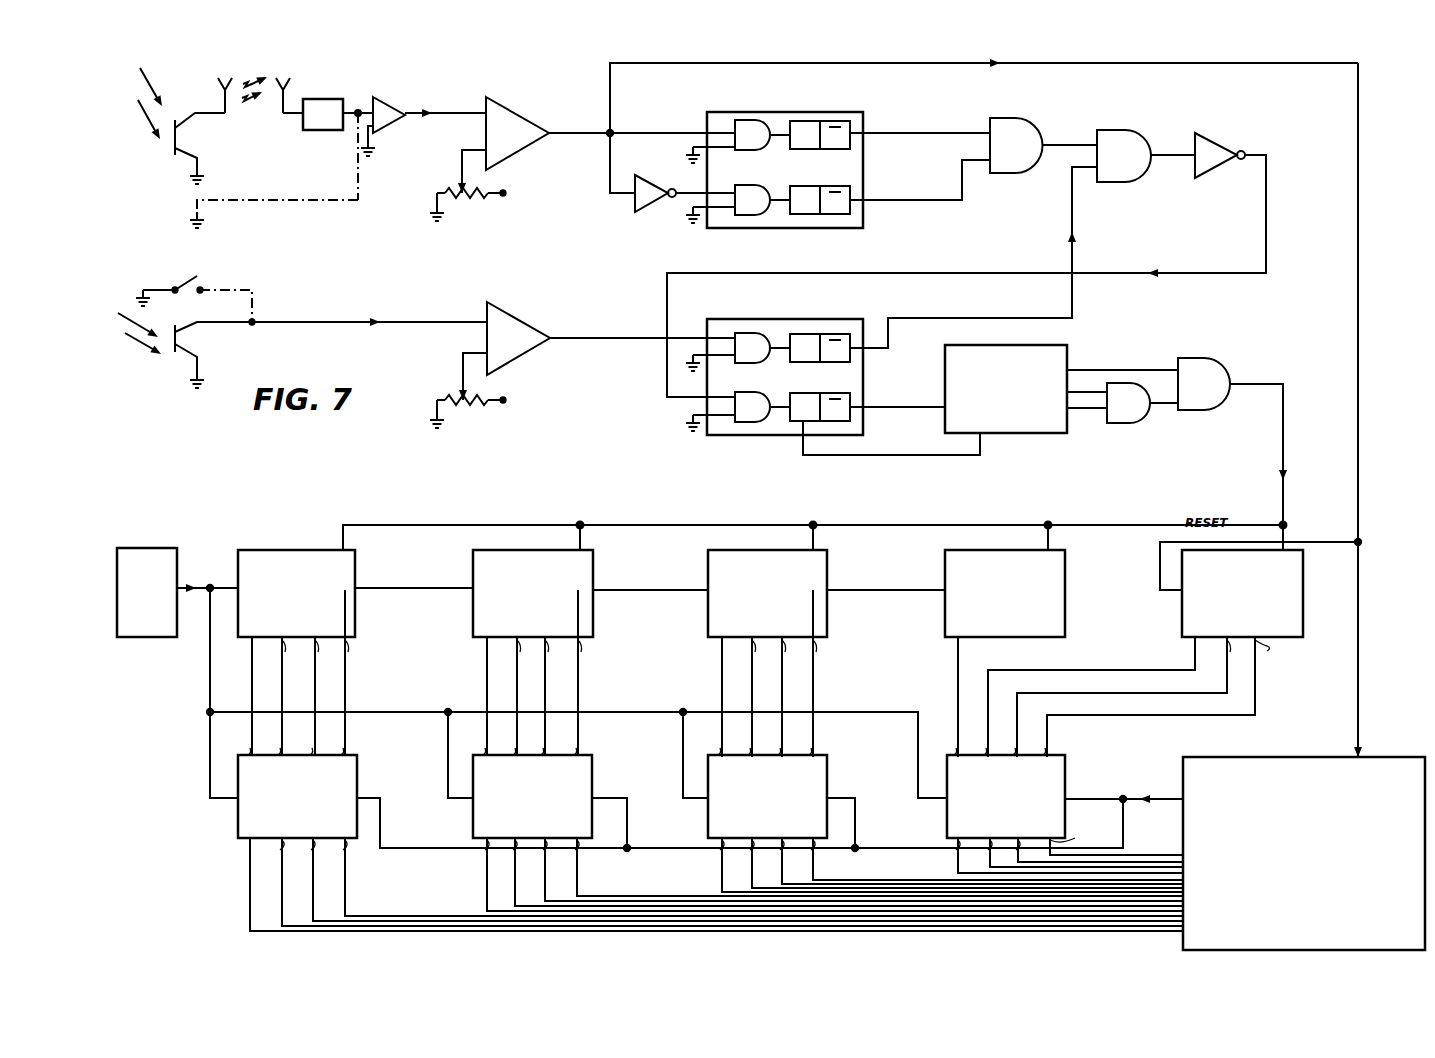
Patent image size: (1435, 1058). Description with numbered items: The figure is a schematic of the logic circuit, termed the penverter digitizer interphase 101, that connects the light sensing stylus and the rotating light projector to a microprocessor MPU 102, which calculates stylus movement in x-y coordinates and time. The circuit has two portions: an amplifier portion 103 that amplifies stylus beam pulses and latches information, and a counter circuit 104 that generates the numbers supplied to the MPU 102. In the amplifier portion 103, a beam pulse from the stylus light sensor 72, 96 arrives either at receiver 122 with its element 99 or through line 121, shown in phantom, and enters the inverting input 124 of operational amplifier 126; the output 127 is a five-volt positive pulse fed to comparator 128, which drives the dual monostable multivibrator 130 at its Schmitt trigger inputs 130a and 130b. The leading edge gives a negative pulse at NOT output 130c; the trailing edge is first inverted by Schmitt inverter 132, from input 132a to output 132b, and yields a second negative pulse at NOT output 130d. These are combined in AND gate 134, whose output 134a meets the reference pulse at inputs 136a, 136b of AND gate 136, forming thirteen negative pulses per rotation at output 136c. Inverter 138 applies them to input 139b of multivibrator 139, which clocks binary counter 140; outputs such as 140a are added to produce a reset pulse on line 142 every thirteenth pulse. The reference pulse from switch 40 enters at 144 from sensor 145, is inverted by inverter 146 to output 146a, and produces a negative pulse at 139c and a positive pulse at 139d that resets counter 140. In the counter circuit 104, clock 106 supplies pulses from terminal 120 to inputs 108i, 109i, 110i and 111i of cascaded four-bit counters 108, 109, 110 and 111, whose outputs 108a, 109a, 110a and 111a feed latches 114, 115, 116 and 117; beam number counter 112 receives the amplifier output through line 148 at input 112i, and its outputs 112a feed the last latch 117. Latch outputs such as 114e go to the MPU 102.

The stylus light sensor 72 is at (169, 126).
The stylus light sensor 96 is at (176, 157).
The receiver element 99 is at (317, 99).
The penverter digitizer interphase 101 is at (132, 461).
The microprocessor 102 is at (1285, 757).
The amplifier circuit portion 103 is at (1335, 215).
The counter circuit 104 is at (1350, 503).
The clock 106 is at (152, 550).
The first binary counter 108 is at (277, 636).
The counter output 108a is at (253, 637).
The counter input 108i is at (237, 588).
The second binary counter 109 is at (474, 625).
The counter output 109a is at (532, 609).
The counter input 109i is at (473, 587).
The third binary counter 110 is at (710, 626).
The counter output 110a is at (765, 614).
The counter input 110i is at (704, 590).
The fourth binary counter 111 is at (946, 626).
The counter output 111a is at (996, 621).
The counter input 111i is at (945, 590).
The beam number counter 112 is at (1175, 626).
The beam number counter output 112a is at (1198, 637).
The beam number counter input 112i is at (1160, 589).
The first latch 114 is at (693, 828).
The latch output 114e is at (248, 847).
The second latch 115 is at (590, 760).
The third latch 116 is at (843, 760).
The last latch 117 is at (1063, 760).
The clock terminal 120 is at (188, 595).
The line 121 is at (273, 200).
The receiver 122 is at (346, 95).
The inverting input 124 is at (378, 144).
The operational amplifier 126 is at (409, 128).
The amplifier output 127 is at (426, 113).
The comparator 128 is at (510, 149).
The dual monostable multivibrator 130 is at (770, 177).
The Schmitt trigger input 130a is at (735, 120).
The Schmitt trigger input 130b is at (716, 190).
The NOT output 130c is at (898, 135).
The NOT output 130d is at (920, 177).
The Schmitt inverter 132 is at (648, 166).
The inverter input 132a is at (630, 203).
The inverter output 132b is at (670, 204).
The AND gate 134 is at (1043, 171).
The AND gate output 134a is at (1046, 152).
The AND gate 136 is at (1026, 219).
The AND gate input 136a is at (1079, 145).
The AND gate input 136b is at (1095, 177).
The AND gate output 136c is at (1171, 153).
The inverter 138 is at (1220, 150).
The multivibrator 139 is at (833, 383).
The multivibrator input 139b is at (723, 398).
The multivibrator output 139c is at (867, 346).
The multivibrator output 139d is at (865, 455).
The binary counter 140 is at (1040, 392).
The counter output 140a is at (1135, 337).
The reset line 142 is at (1283, 396).
The reference pulse input 144 is at (254, 320).
The sensor 145 is at (172, 348).
The inverter 146 is at (518, 343).
The inverter output 146a is at (652, 341).
The line 148 is at (1332, 63).
The reference switch 40 is at (190, 278).